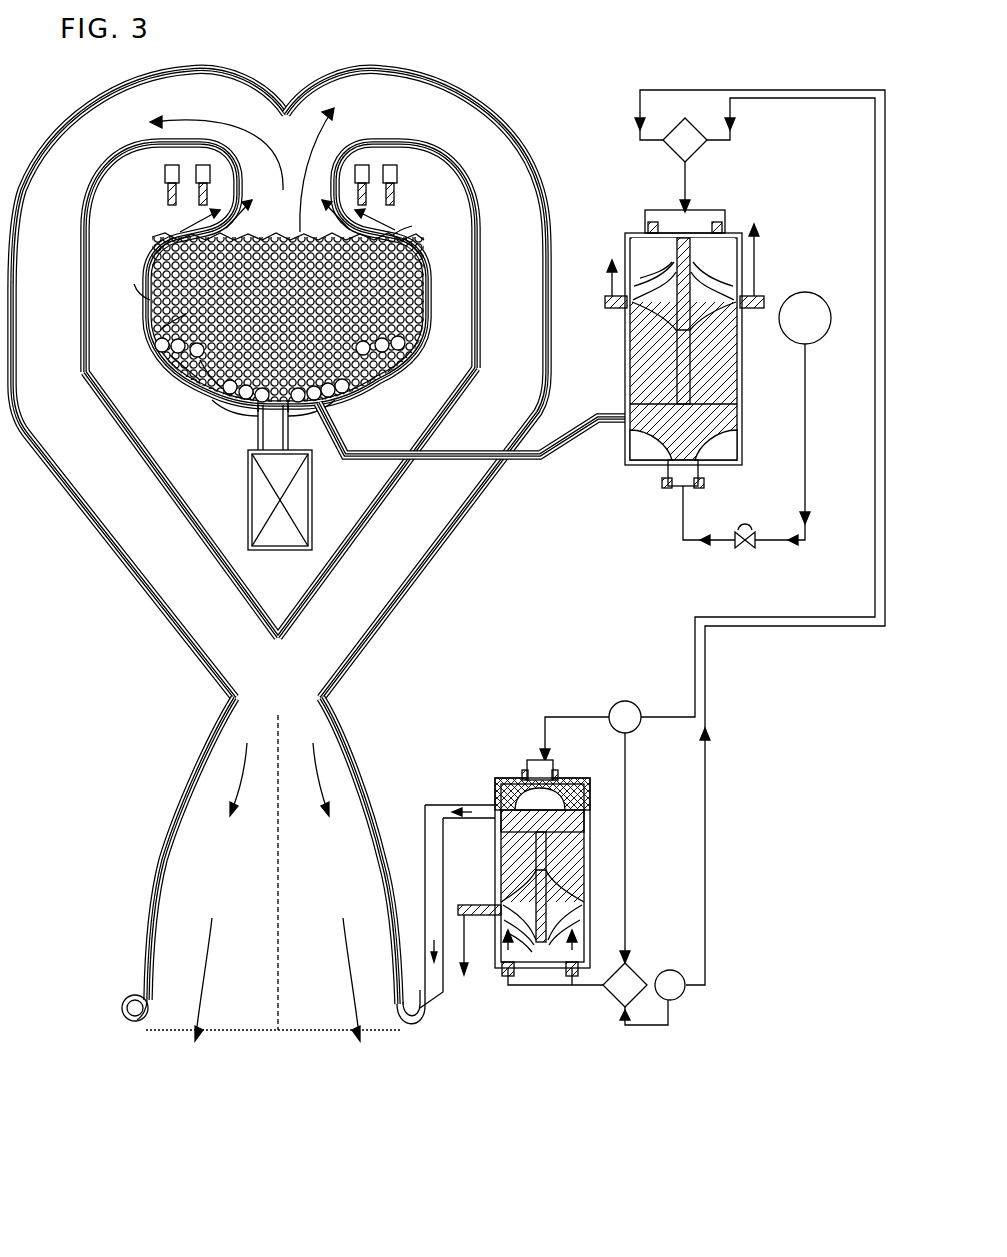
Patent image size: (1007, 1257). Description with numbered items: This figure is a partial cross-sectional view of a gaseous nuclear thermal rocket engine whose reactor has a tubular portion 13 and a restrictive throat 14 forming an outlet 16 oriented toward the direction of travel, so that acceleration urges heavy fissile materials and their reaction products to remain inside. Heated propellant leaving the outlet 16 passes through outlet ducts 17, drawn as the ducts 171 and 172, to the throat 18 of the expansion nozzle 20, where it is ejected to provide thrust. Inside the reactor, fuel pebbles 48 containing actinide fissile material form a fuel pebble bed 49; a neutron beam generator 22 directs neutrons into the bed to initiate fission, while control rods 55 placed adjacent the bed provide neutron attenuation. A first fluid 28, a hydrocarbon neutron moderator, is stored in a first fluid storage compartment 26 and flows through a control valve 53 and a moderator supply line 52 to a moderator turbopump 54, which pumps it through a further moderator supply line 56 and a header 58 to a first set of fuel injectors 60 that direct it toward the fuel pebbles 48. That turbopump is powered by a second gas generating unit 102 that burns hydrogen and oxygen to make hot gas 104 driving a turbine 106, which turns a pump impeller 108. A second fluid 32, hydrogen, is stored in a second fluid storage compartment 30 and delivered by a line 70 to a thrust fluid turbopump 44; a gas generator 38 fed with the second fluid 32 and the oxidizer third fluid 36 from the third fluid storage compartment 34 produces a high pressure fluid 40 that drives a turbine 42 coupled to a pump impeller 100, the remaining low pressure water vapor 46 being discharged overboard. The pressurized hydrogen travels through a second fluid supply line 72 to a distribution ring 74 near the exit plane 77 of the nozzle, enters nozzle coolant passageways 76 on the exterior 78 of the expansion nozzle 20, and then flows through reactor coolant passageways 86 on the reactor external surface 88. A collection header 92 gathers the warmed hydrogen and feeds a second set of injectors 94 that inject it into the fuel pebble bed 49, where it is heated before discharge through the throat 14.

The tubular portion 13 is at (431, 285).
The throat 14 is at (244, 182).
The outlet 16 is at (325, 170).
The ducts 17 is at (279, 378).
The duct 171 is at (100, 100).
The duct 172 is at (436, 84).
The throat of expansion nozzle 18 is at (312, 702).
The expansion nozzle 20 is at (230, 1038).
The neutron beam generator 22 is at (247, 470).
The first fluid storage compartment 26 is at (826, 298).
The first fluid 28 is at (822, 336).
The second fluid storage compartment 30 is at (640, 733).
The second fluid 32 is at (613, 730).
The third fluid storage compartment 34 is at (683, 996).
The third fluid 36 is at (678, 970).
The gas generator 38 is at (632, 966).
The high pressure fluid 40 is at (590, 990).
The turbine 42 is at (584, 884).
The thrust fluid turbopump 44 is at (496, 866).
The low pressure water vapor stream 46 is at (618, 268).
The fuel pebbles 48 is at (392, 236).
The fuel pebble bed 49 is at (434, 255).
The moderator supply line 52 is at (748, 548).
The control valve 53 is at (740, 533).
The moderator turbopump 54 is at (628, 266).
The control rods 55 is at (168, 190).
The moderator supply line 56 is at (382, 452).
The header 58 is at (228, 420).
The first set of fuel injectors 60 is at (258, 406).
The line 70 is at (565, 712).
The second fluid supply line 72 is at (438, 805).
The distribution ring 74 is at (428, 1030).
The nozzle coolant passageways 76 is at (356, 754).
The exit plane 77 is at (376, 1034).
The exterior 78 is at (165, 910).
The reactor coolant passageways 86 is at (146, 292).
The reactor external surface 88 is at (158, 320).
The collection header 92 is at (218, 398).
The second set of injectors 94 is at (156, 346).
The pump impeller 100 is at (590, 782).
The second gas generating unit 102 is at (695, 147).
The hot gas 104 is at (686, 176).
The turbine 106 is at (730, 326).
The pump impeller 108 is at (662, 460).